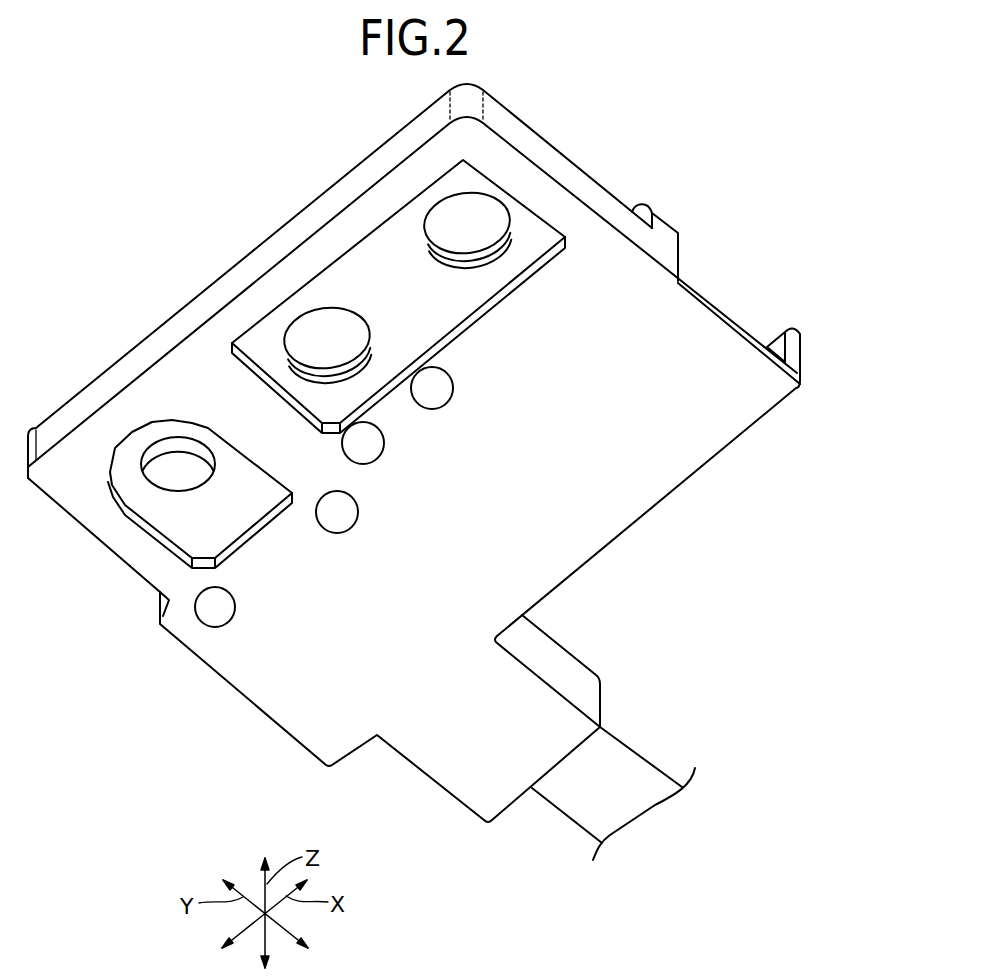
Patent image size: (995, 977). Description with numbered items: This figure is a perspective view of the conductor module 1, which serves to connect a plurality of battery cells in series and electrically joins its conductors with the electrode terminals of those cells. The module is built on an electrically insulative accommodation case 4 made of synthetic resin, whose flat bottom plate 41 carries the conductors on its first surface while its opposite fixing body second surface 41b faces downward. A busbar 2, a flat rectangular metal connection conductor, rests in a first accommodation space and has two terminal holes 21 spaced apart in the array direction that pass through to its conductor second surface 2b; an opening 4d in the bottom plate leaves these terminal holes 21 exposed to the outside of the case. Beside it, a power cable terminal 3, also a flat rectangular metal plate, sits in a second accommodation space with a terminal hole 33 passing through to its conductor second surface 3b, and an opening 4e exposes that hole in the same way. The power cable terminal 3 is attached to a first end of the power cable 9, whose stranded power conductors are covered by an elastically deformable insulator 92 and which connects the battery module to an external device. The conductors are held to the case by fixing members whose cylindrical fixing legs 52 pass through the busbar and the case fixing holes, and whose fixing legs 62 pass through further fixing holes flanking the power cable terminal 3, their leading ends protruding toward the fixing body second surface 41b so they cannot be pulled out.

The conductor module 1 is at (186, 208).
The busbar 2 is at (406, 252).
The conductor second surface 2b is at (376, 280).
The power cable terminal 3 is at (168, 458).
The conductor second surface 3b is at (243, 463).
The accommodation case 4 is at (614, 184).
The opening 4d is at (385, 245).
The opening 4e is at (135, 448).
The power cable 9 is at (613, 763).
The terminal holes 21 is at (452, 215).
The terminal hole 33 is at (168, 460).
The bottom plate 41 is at (414, 601).
The fixing body second surface 41b is at (595, 502).
The fixing legs 52 is at (365, 452).
The fixing legs 62 is at (338, 516).
The insulator 92 is at (618, 757).